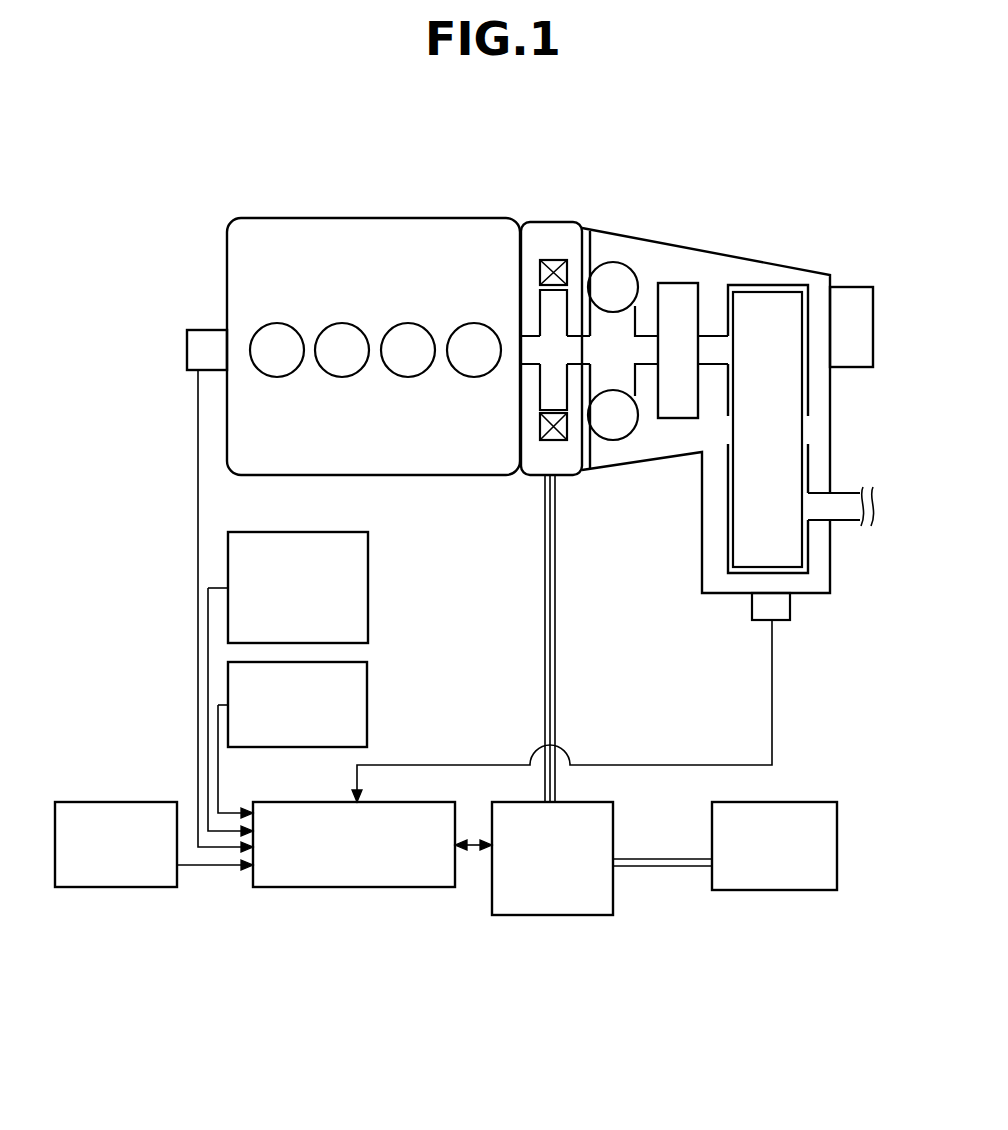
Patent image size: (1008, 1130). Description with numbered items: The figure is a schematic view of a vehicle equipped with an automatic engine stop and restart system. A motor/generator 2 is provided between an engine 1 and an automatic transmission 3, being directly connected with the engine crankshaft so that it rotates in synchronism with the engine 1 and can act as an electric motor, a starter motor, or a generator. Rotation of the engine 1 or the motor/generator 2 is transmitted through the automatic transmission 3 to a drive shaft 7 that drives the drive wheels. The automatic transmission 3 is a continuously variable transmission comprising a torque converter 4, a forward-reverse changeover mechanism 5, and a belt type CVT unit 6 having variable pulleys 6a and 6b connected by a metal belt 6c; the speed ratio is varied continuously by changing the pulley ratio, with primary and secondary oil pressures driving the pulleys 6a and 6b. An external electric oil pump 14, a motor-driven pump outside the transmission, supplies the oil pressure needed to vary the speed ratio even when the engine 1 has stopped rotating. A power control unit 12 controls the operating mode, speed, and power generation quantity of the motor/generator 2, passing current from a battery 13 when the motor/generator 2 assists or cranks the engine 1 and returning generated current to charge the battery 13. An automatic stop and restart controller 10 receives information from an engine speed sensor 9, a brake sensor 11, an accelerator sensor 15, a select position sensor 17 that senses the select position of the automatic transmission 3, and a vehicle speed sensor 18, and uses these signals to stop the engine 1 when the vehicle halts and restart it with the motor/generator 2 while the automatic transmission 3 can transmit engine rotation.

The engine 1 is at (332, 228).
The motor/generator 2 is at (548, 228).
The automatic transmission 3 is at (606, 231).
The torque converter 4 is at (624, 272).
The forward-reverse changeover mechanism 5 is at (680, 283).
The belt type CVT unit 6 is at (811, 394).
The variable pulley 6a is at (808, 388).
The variable pulley 6b is at (808, 555).
The metal belt 6c is at (792, 435).
The drive shaft 7 is at (838, 500).
The engine speed sensor 9 is at (192, 351).
The automatic stop and restart controller 10 is at (368, 888).
The brake sensor 11 is at (117, 888).
The power control unit 12 is at (558, 917).
The battery 13 is at (778, 892).
The external electric oil pump 14 is at (857, 286).
The accelerator sensor 15 is at (367, 680).
The select position sensor 17 is at (790, 610).
The vehicle speed sensor 18 is at (368, 552).